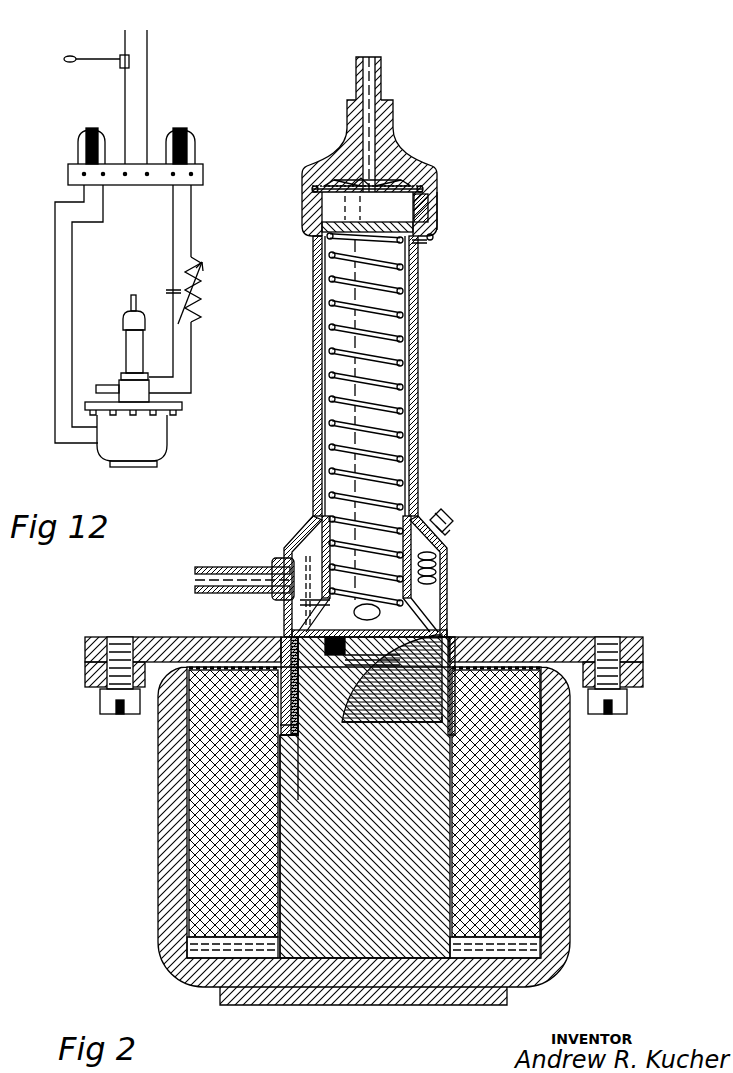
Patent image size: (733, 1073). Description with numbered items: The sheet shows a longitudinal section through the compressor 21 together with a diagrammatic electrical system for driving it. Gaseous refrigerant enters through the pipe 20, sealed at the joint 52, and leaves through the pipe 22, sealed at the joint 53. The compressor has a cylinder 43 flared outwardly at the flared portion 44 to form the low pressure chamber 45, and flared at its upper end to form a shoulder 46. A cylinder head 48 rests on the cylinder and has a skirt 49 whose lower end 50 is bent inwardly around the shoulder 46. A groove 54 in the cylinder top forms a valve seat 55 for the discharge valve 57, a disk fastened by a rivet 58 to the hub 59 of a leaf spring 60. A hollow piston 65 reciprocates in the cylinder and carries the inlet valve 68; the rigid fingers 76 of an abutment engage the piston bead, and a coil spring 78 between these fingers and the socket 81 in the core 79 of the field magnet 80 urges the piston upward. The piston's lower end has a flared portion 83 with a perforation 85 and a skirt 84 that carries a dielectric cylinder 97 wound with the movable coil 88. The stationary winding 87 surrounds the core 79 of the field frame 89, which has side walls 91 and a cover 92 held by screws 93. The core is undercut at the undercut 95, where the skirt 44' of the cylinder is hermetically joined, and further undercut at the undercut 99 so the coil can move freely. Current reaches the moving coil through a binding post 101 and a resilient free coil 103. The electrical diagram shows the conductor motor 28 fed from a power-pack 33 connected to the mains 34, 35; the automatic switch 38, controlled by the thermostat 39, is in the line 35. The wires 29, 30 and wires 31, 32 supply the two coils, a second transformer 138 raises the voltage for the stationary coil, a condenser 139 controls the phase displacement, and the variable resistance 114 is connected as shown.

In FIG. 2, the pipe 20 is at (215, 568).
In FIG. 2, the compressor 21 is at (418, 386).
In FIG. 2, the pipe 22 is at (381, 75).
In FIG. 12, the conductor motor 28 is at (134, 468).
In FIG. 12, the wire 29 is at (55, 265).
In FIG. 12, the wire 30 is at (72, 282).
In FIG. 12, the wire 31 is at (173, 229).
In FIG. 12, the wire 32 is at (191, 243).
In FIG. 12, the power-pack 33 is at (139, 180).
In FIG. 12, the alternating current main 34 is at (125, 80).
In FIG. 12, the alternating current main 35 is at (147, 96).
In FIG. 12, the automatic switch 38 is at (120, 56).
In FIG. 12, the thermostat 39 is at (183, 130).
In FIG. 2, the cylinder 43 is at (332, 208).
In FIG. 2, the flared portion 44 is at (360, 563).
In FIG. 2, the skirt 44' is at (209, 748).
In FIG. 2, the low pressure chamber 45 is at (306, 546).
In FIG. 2, the shoulder 46 is at (427, 242).
In FIG. 2, the cylinder head 48 is at (395, 142).
In FIG. 2, the skirt 49 is at (437, 210).
In FIG. 2, the lower end of skirt 50 is at (434, 237).
In FIG. 2, the joint 52 is at (278, 566).
In FIG. 2, the joint 53 is at (350, 98).
In FIG. 2, the groove 54 is at (437, 188).
In FIG. 2, the valve seat 55 is at (424, 196).
In FIG. 2, the discharge valve 57 is at (312, 189).
In FIG. 2, the rivet 58 is at (378, 188).
In FIG. 2, the hub 59 is at (332, 180).
In FIG. 2, the leaf spring 60 is at (345, 183).
In FIG. 2, the piston 65 is at (418, 421).
In FIG. 2, the inlet valve 68 is at (322, 228).
In FIG. 2, the fingers 76 is at (325, 244).
In FIG. 2, the coil spring 78 is at (400, 338).
In FIG. 2, the core 79 is at (445, 630).
In FIG. 2, the field magnet 80 is at (520, 820).
In FIG. 2, the socket 81 is at (298, 629).
In FIG. 2, the flared portion 83 is at (300, 602).
In FIG. 2, the skirt 84 is at (450, 634).
In FIG. 2, the perforation 85 is at (385, 615).
In FIG. 2, the stationary winding 87 is at (560, 873).
In FIG. 2, the movable coil 88 is at (372, 688).
In FIG. 2, the field frame 89 is at (352, 985).
In FIG. 2, the side walls 91 is at (160, 820).
In FIG. 2, the cover 92 is at (640, 636).
In FIG. 2, the screws 93 is at (105, 700).
In FIG. 2, the undercut 95 is at (288, 790).
In FIG. 2, the cylinder of dielectric material 97 is at (406, 722).
In FIG. 2, the undercut 99 is at (298, 740).
In FIG. 2, the binding post 101 is at (448, 513).
In FIG. 2, the free coil 103 is at (438, 566).
In FIG. 12, the variable resistance 114 is at (258, 277).
In FIG. 12, the second transformer 138 is at (88, 130).
In FIG. 12, the condenser 139 is at (172, 288).